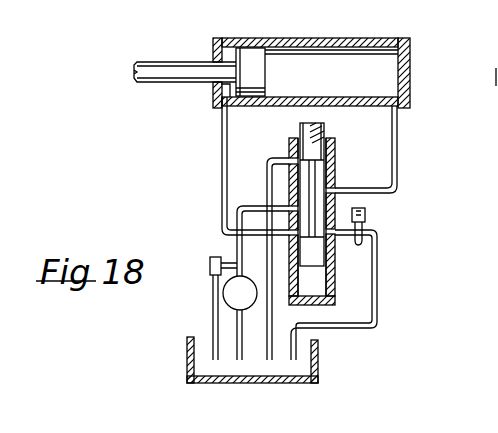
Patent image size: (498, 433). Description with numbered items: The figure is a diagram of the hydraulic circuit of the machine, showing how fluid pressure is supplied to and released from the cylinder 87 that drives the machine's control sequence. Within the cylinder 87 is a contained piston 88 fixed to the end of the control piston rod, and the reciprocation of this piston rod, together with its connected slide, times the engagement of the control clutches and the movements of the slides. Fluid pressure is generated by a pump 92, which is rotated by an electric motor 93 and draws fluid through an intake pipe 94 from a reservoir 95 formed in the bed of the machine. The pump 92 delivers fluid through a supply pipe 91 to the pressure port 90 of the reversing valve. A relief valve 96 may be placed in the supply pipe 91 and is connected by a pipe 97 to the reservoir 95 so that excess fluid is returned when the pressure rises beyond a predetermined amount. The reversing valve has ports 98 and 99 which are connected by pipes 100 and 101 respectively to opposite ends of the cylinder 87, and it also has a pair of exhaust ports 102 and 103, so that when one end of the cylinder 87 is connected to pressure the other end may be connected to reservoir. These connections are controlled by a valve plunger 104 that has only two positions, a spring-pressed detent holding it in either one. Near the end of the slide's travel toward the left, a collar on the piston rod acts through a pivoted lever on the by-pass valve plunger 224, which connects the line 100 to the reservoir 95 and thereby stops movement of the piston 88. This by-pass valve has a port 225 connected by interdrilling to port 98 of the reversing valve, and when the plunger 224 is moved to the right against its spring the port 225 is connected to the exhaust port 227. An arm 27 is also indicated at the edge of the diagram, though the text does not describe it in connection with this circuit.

The arm 27 is at (497, 107).
The cylinder 87 is at (399, 42).
The piston 88 is at (255, 60).
The electric motor 93 is at (331, 0).
The pipe 100 is at (222, 151).
The pipe 101 is at (395, 156).
The exhaust port 102 is at (278, 160).
The valve plunger 104 is at (323, 140).
The port 98 is at (335, 186).
The pressure port 90 is at (285, 206).
The supply pipe 91 is at (224, 208).
The port 99 is at (289, 238).
The relief valve 96 is at (211, 262).
The pipe 97 is at (212, 281).
The pump 92 is at (238, 294).
The intake pipe 94 is at (238, 328).
The reservoir 95 is at (319, 363).
The exhaust port 103 is at (288, 278).
The by-pass valve plunger 224 is at (366, 214).
The port 225 is at (358, 246).
The exhaust port 227 is at (375, 238).